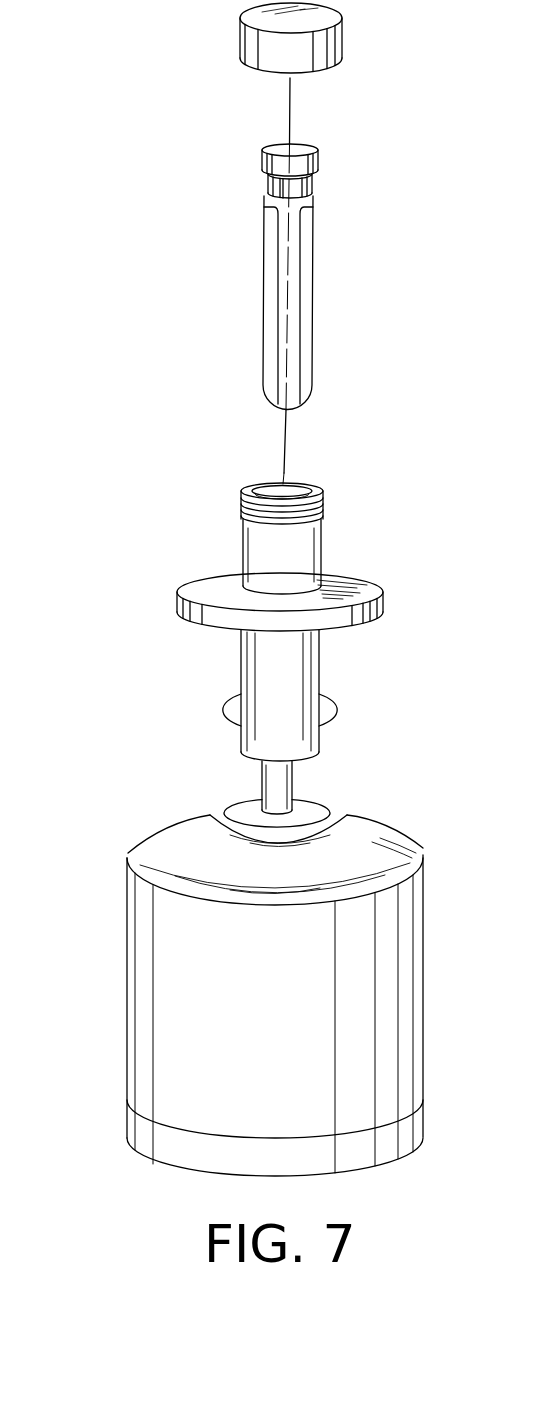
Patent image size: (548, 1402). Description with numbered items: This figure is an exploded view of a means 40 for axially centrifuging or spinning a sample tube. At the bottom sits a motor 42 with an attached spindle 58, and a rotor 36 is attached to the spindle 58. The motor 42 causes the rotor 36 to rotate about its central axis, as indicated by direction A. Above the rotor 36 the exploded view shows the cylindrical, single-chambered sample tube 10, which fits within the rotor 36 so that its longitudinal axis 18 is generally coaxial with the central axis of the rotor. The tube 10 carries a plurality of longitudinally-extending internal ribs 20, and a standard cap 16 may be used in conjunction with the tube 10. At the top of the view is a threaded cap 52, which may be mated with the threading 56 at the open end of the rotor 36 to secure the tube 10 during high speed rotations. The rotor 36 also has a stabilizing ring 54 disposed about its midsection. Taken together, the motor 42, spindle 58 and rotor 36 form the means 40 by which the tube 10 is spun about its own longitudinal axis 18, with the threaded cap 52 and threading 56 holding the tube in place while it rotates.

The sample tube 10 is at (222, 227).
The cap 16 is at (318, 160).
The longitudinal axis 18 is at (283, 108).
The internal ribs 20 is at (298, 258).
The rotor 36 is at (323, 548).
The means for axially centrifuging the tube 40 is at (102, 827).
The motor 42 is at (272, 982).
The threaded cap 52 is at (342, 37).
The stabilizing ring 54 is at (177, 600).
The threading 56 is at (242, 503).
The spindle 58 is at (294, 785).
The direction of rotation A is at (261, 737).